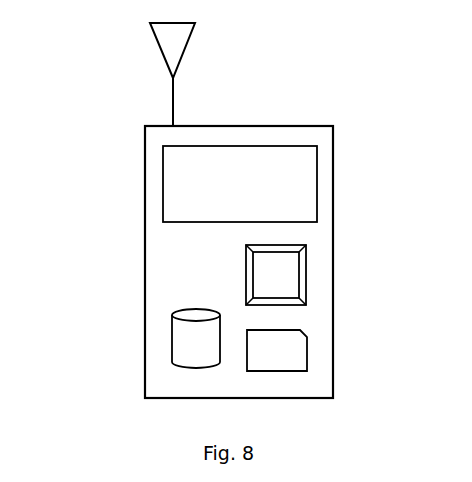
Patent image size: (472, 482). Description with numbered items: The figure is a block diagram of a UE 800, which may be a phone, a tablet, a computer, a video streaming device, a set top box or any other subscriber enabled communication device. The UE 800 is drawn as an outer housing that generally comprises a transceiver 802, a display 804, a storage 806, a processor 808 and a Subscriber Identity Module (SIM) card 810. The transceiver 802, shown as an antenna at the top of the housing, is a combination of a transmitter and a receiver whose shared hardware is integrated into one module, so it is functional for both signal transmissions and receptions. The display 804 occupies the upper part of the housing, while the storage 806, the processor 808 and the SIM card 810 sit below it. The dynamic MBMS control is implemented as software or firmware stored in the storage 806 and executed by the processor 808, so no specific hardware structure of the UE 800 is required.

The UE 800 is at (145, 156).
The transceiver 802 is at (157, 52).
The display 804 is at (163, 208).
The storage 806 is at (172, 338).
The processor 808 is at (307, 269).
The Subscriber Identity Module (SIM) card 810 is at (308, 347).